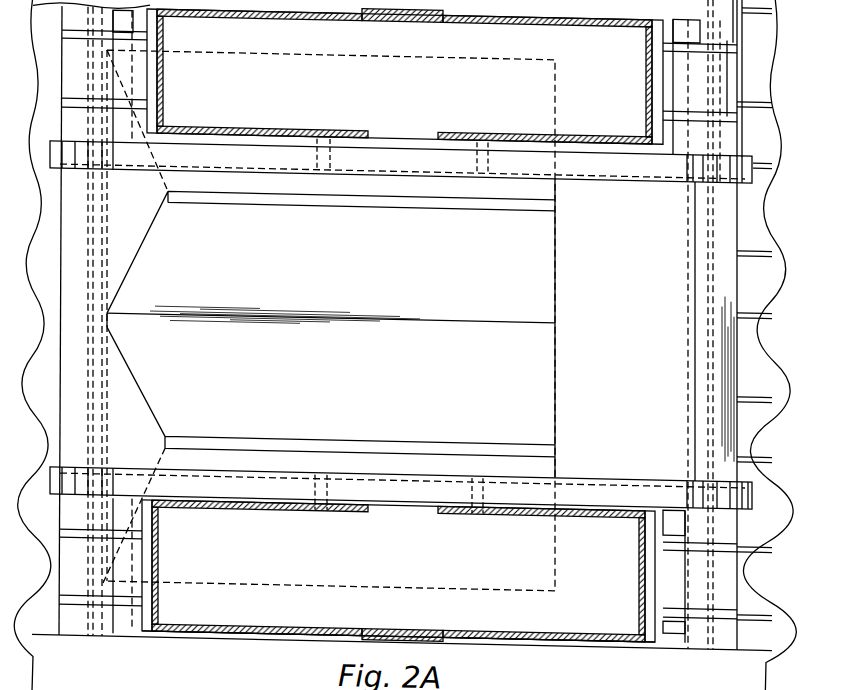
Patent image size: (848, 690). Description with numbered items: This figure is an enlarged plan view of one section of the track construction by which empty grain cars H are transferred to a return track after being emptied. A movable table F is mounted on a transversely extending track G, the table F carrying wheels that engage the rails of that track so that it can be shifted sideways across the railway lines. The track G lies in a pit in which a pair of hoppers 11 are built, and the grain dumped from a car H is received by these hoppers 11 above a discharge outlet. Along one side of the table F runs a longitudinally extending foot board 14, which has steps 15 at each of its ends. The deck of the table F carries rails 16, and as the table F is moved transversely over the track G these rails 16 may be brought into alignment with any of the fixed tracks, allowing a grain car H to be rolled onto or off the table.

The hopper 11 is at (535, 422).
The foot board 14 is at (427, 497).
The step 15 is at (730, 181).
The rail 16 is at (680, 101).
The movable table F is at (607, 146).
The transversely extending track G is at (102, 266).
The grain car H is at (608, 619).